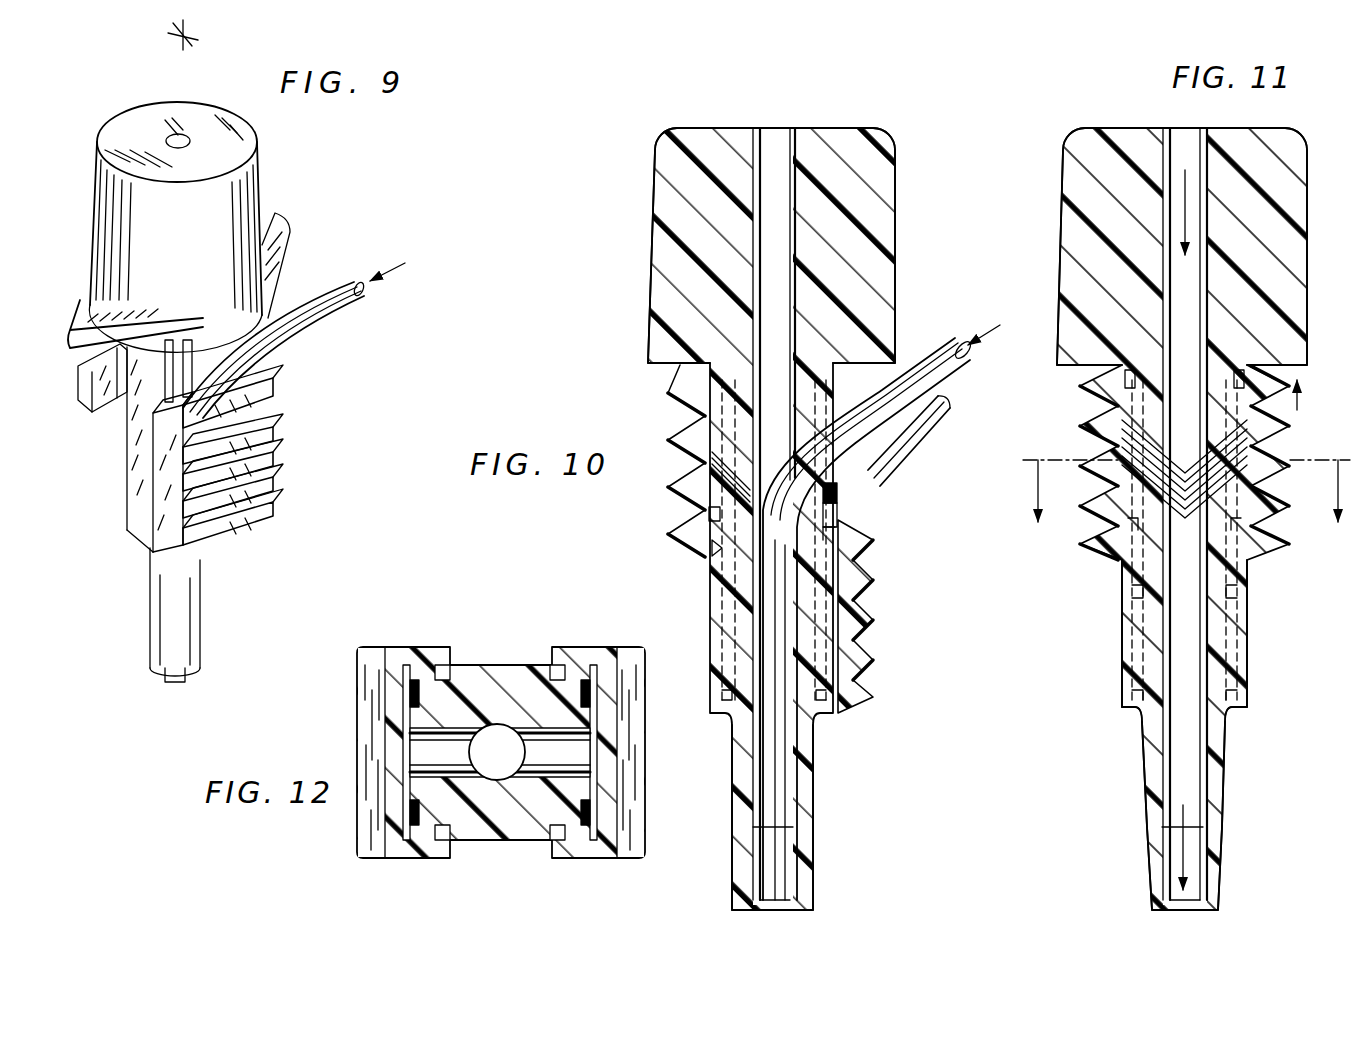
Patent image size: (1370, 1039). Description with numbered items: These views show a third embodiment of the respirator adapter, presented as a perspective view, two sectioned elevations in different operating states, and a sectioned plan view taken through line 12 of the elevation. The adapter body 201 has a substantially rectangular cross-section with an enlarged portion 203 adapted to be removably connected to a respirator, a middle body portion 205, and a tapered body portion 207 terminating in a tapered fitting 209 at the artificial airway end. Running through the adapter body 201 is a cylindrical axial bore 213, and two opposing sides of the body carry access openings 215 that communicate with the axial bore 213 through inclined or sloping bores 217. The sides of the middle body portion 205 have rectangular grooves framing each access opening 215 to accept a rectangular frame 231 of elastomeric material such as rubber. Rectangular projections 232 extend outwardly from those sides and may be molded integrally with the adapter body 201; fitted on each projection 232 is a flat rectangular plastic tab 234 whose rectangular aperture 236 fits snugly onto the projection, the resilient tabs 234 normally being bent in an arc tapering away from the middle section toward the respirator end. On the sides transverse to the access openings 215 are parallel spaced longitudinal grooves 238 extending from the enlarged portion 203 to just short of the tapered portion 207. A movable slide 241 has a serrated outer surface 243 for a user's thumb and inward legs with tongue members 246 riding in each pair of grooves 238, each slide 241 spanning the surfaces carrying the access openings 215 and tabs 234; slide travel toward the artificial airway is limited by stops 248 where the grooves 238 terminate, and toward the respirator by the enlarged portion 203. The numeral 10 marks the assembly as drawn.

In FIG. 9, the suction catheter assembly 10 is at (178, 38).
In FIG. 11, the section line 12 is at (1167, 507).
In FIG. 9, the adapter body 201 is at (332, 245).
In FIG. 10, the adapter body 201 is at (912, 216).
In FIG. 11, the adapter body 201 is at (1317, 211).
In FIG. 9, the enlarged portion 203 is at (258, 172).
In FIG. 10, the enlarged portion 203 is at (660, 258).
In FIG. 11, the enlarged portion 203 is at (1062, 255).
In FIG. 9, the middle body portion 205 is at (137, 507).
In FIG. 11, the middle body portion 205 is at (1124, 628).
In FIG. 10, the tapered body portion 207 is at (795, 778).
In FIG. 11, the tapered body portion 207 is at (1203, 798).
In FIG. 10, the tapered fitting 209 is at (795, 815).
In FIG. 10, the cylindrical axial bore 213 is at (753, 430).
In FIG. 11, the cylindrical axial bore 213 is at (1163, 677).
In FIG. 11, the access openings 215 is at (1115, 485).
In FIG. 10, the inclined or sloping bores 217 is at (708, 520).
In FIG. 12, the inclined or sloping bores 217 is at (425, 728).
In FIG. 9, the rectangular frame 231 is at (192, 330).
In FIG. 12, the rectangular frame 231 is at (415, 820).
In FIG. 10, the rectangular projections 232 is at (705, 558).
In FIG. 9, the flat rectangular plastic tab 234 is at (255, 357).
In FIG. 10, the flat rectangular plastic tab 234 is at (707, 385).
In FIG. 11, the flat rectangular plastic tab 234 is at (1117, 383).
In FIG. 10, the rectangular aperture 236 is at (708, 538).
In FIG. 9, the longitudinal grooves 238 is at (158, 380).
In FIG. 10, the longitudinal grooves 238 is at (717, 693).
In FIG. 11, the longitudinal grooves 238 is at (1137, 593).
In FIG. 12, the longitudinal grooves 238 is at (470, 665).
In FIG. 9, the movable slide 241 is at (273, 437).
In FIG. 12, the movable slide 241 is at (408, 648).
In FIG. 9, the serrated outer surface 243 is at (272, 385).
In FIG. 12, the tongue members 246 is at (540, 698).
In FIG. 11, the stops 248 is at (1138, 712).